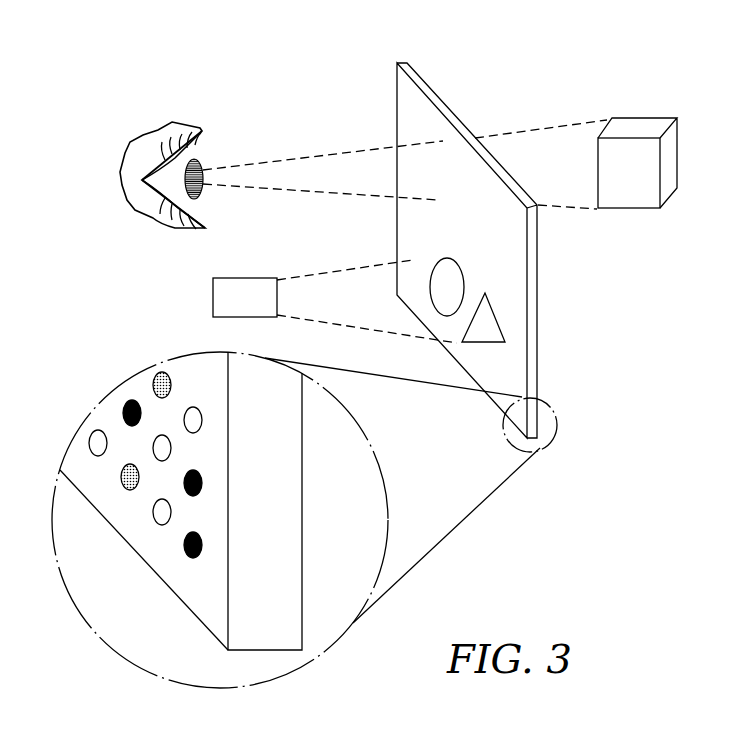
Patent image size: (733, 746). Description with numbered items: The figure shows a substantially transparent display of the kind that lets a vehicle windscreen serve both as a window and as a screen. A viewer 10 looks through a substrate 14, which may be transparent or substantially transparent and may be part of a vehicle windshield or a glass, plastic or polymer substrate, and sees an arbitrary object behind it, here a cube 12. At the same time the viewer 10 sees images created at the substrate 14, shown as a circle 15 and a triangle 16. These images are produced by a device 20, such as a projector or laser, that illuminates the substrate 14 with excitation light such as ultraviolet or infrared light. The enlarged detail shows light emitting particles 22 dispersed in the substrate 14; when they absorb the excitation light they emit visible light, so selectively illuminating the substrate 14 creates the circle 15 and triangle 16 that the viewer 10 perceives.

The viewer 10 is at (200, 160).
The cube 12 is at (642, 127).
The substrate 14 is at (438, 98).
The circle 15 is at (430, 282).
The triangle 16 is at (475, 324).
The device 20 is at (243, 278).
The light emitting particles 22 is at (156, 385).